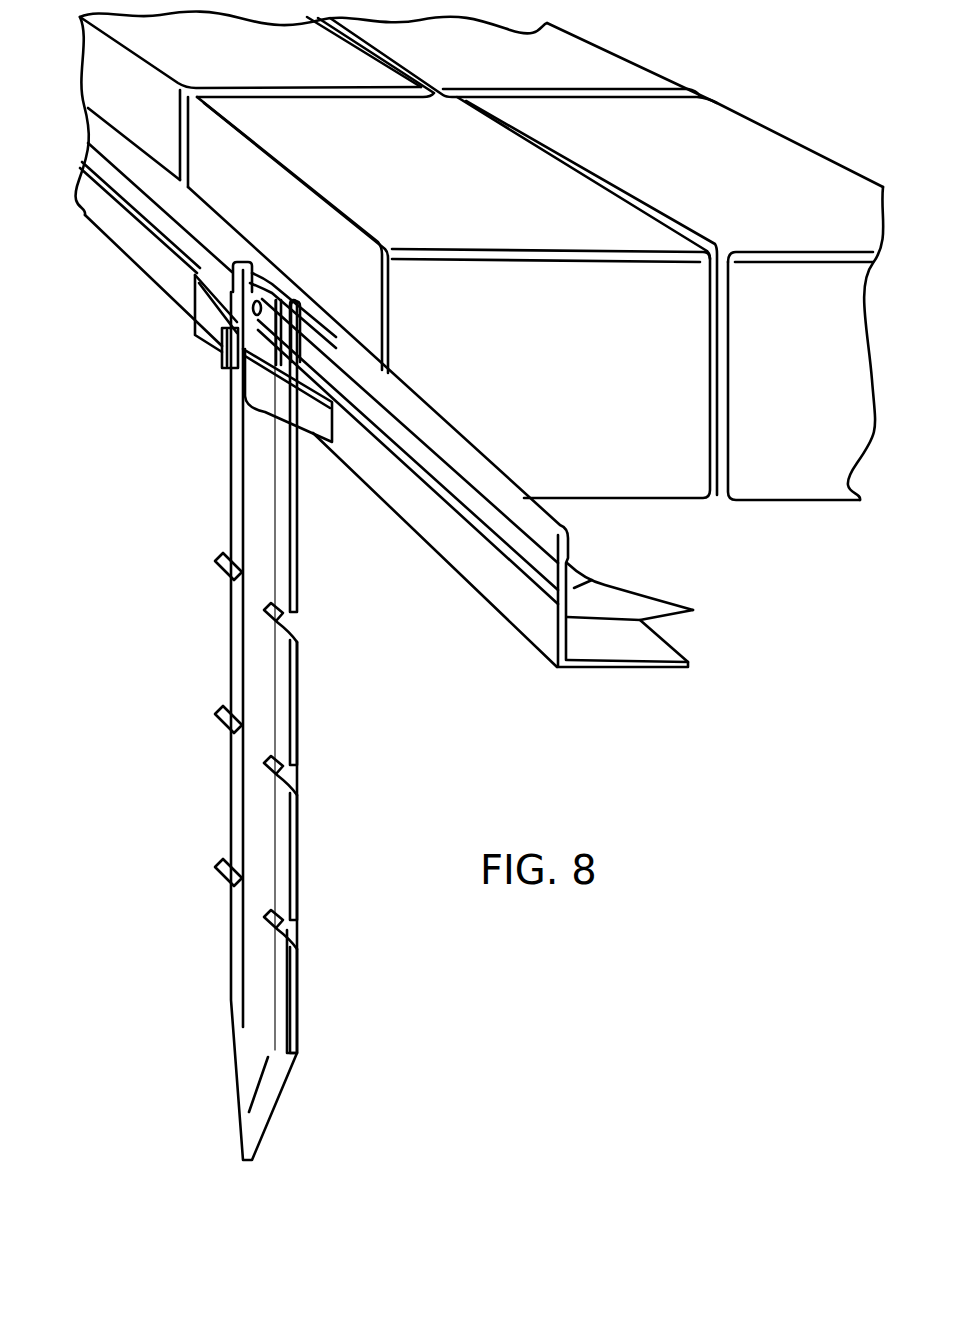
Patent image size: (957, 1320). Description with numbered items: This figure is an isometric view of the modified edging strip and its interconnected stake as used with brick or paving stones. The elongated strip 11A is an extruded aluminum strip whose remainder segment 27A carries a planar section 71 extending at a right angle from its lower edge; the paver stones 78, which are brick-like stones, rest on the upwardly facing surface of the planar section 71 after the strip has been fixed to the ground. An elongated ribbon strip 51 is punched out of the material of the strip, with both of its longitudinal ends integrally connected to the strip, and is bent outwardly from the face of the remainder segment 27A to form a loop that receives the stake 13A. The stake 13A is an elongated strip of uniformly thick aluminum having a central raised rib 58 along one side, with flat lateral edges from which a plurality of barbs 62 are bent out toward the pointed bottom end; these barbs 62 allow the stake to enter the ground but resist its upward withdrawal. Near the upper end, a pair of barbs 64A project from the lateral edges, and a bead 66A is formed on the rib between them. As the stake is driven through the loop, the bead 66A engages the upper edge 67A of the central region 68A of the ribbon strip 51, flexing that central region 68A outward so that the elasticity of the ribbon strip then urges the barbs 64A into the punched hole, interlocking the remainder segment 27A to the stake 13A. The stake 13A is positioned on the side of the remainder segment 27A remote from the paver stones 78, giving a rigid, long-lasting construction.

The paver stones 78 is at (480, 256).
The elongated strip 11A is at (406, 397).
The remainder segment 27A is at (413, 531).
The planar section 71 is at (642, 642).
The stake 13A is at (220, 711).
The raised rib 58 is at (250, 793).
The barbs 62 is at (263, 912).
The elongated ribbon strip 51 is at (210, 357).
The central region 68A is at (236, 378).
The barbs 64A is at (300, 378).
The bead 66A is at (245, 338).
The upper edge 67A is at (245, 350).